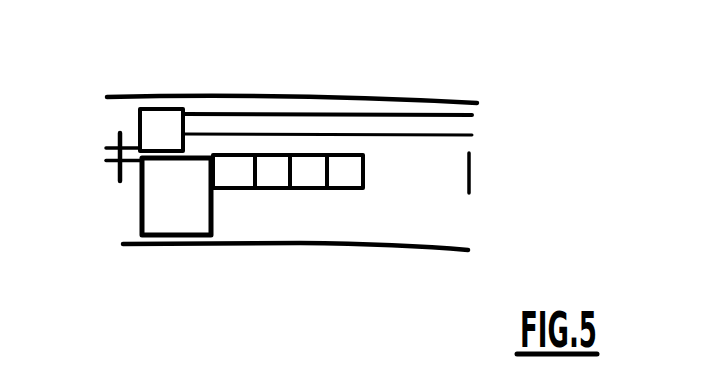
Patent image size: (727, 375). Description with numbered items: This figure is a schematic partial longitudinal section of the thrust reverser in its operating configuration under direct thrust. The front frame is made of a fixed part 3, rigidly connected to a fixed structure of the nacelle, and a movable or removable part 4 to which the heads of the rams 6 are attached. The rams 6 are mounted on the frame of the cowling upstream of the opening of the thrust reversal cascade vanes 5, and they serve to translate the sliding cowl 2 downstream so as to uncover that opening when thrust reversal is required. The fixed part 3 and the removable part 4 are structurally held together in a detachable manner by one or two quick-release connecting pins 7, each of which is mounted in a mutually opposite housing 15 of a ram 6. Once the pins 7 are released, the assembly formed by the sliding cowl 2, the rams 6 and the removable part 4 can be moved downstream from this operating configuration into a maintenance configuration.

The cowling 2 is at (260, 94).
The fixed part 3 is at (137, 205).
The movable part 4 is at (138, 124).
The thrust reversal cascade vanes 5 is at (315, 190).
The rams 6 is at (458, 125).
The quick-release connecting pins 7 is at (117, 142).
The housing 15 is at (117, 178).